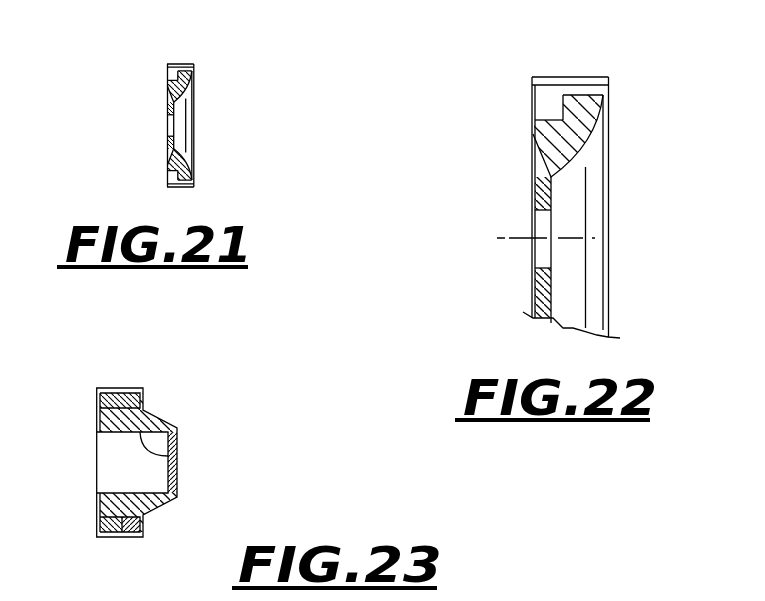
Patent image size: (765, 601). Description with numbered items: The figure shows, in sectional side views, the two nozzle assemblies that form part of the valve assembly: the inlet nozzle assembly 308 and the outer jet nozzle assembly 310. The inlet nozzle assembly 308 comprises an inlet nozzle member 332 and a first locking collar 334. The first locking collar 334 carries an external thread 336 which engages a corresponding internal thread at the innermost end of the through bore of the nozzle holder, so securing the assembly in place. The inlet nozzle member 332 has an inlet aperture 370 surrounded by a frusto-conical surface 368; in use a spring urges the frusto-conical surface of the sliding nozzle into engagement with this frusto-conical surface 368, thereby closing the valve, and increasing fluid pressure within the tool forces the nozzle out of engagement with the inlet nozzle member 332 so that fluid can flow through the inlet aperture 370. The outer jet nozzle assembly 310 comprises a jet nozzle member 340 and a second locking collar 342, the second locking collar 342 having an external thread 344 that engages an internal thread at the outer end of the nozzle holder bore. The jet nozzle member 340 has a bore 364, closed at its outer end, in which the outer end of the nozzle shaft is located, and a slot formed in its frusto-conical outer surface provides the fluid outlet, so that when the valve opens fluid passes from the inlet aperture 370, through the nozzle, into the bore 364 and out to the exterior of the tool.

In FIG. 21, the inlet nozzle assembly 308 is at (216, 127).
In FIG. 22, the inlet nozzle assembly 308 is at (502, 167).
In FIG. 23, the outer jet nozzle assembly 310 is at (186, 408).
In FIG. 21, the inlet nozzle member 332 is at (170, 148).
In FIG. 22, the inlet nozzle member 332 is at (537, 192).
In FIG. 21, the first locking collar 334 is at (168, 78).
In FIG. 22, the first locking collar 334 is at (532, 107).
In FIG. 21, the external thread 336 is at (178, 64).
In FIG. 22, the external thread 336 is at (570, 78).
In FIG. 23, the jet nozzle member 340 is at (100, 417).
In FIG. 23, the second locking collar 342 is at (135, 527).
In FIG. 23, the external thread 344 is at (123, 540).
In FIG. 23, the bore 364 is at (168, 454).
In FIG. 21, the frusto-conical surface 368 is at (197, 102).
In FIG. 22, the frusto-conical surface 368 is at (585, 174).
In FIG. 21, the inlet aperture 370 is at (170, 128).
In FIG. 22, the inlet aperture 370 is at (535, 252).